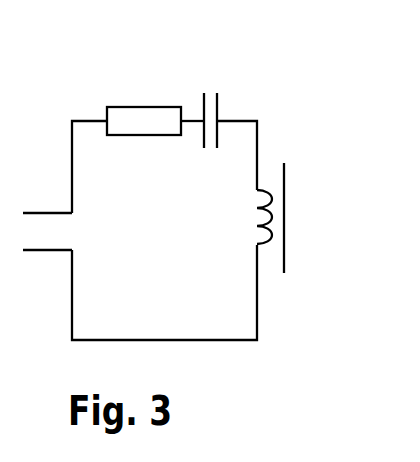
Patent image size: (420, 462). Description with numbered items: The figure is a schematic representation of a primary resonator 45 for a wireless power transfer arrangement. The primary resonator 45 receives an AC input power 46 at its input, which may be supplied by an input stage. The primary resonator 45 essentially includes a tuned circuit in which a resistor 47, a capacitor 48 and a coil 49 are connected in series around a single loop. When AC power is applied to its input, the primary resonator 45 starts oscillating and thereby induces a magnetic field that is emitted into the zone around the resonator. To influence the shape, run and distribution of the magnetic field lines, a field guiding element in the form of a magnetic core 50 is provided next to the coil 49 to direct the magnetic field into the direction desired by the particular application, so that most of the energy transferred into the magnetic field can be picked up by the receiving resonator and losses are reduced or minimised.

The primary resonator 45 is at (64, 108).
The AC input power 46 is at (40, 231).
The resistor 47 is at (155, 107).
The capacitor 48 is at (207, 92).
The coil 49 is at (247, 217).
The magnetic core 50 is at (284, 156).